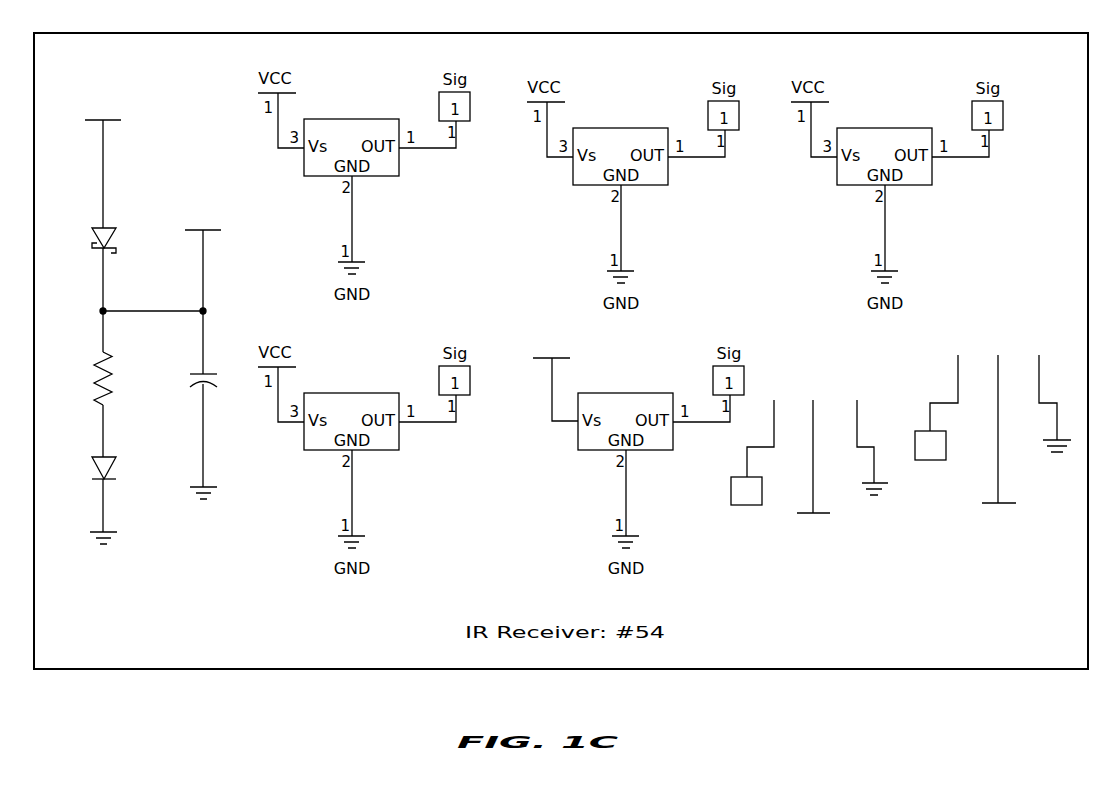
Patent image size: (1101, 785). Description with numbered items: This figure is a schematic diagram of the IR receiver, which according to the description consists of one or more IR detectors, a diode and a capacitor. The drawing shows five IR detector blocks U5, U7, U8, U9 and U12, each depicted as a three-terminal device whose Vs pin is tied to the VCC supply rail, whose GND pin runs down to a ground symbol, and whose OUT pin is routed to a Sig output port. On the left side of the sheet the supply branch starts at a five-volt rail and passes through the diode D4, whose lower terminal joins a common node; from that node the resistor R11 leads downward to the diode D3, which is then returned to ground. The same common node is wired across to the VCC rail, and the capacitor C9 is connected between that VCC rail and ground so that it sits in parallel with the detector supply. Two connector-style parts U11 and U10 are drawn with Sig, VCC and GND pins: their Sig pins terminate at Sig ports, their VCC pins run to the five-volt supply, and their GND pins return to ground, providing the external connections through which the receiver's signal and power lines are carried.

The diode D4 is at (91, 200).
The resistor R11 is at (130, 382).
The diode D3 is at (91, 505).
The capacitor C9 is at (193, 365).
The IR receiver U5 is at (364, 186).
The IR receiver U7 is at (364, 460).
The IR receiver U8 is at (633, 195).
The IR receiver U9 is at (638, 452).
The IR receiver connector U10 is at (995, 421).
The IR receiver connector U11 is at (811, 440).
The IR receiver U12 is at (897, 195).